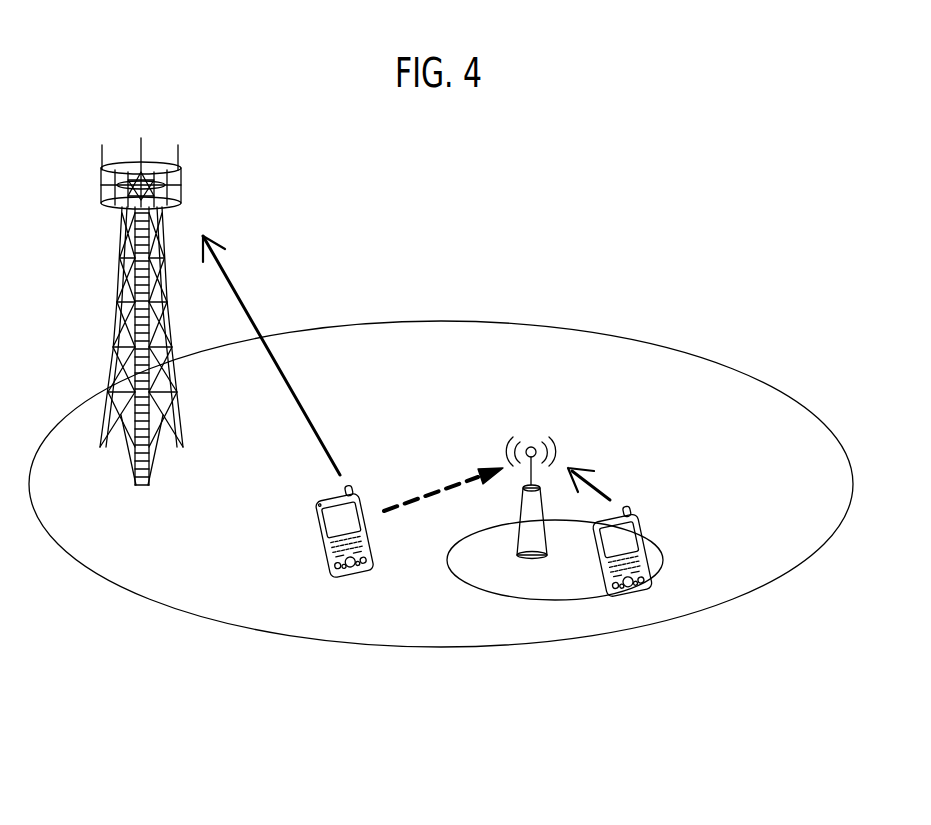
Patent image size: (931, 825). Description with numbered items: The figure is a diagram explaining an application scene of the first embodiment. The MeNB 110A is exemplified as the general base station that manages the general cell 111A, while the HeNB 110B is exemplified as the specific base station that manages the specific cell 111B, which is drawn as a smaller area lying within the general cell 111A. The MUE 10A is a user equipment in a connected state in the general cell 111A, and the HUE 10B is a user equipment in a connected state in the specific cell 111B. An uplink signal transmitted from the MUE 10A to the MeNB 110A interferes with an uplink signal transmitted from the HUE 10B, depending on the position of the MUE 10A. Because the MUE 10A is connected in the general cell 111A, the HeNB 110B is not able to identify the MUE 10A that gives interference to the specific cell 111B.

The MeNB 110A is at (180, 188).
The general cell 111A is at (677, 347).
The HeNB 110B is at (520, 558).
The specific cell 111B is at (528, 600).
The MUE 10A is at (336, 580).
The HUE 10B is at (635, 600).